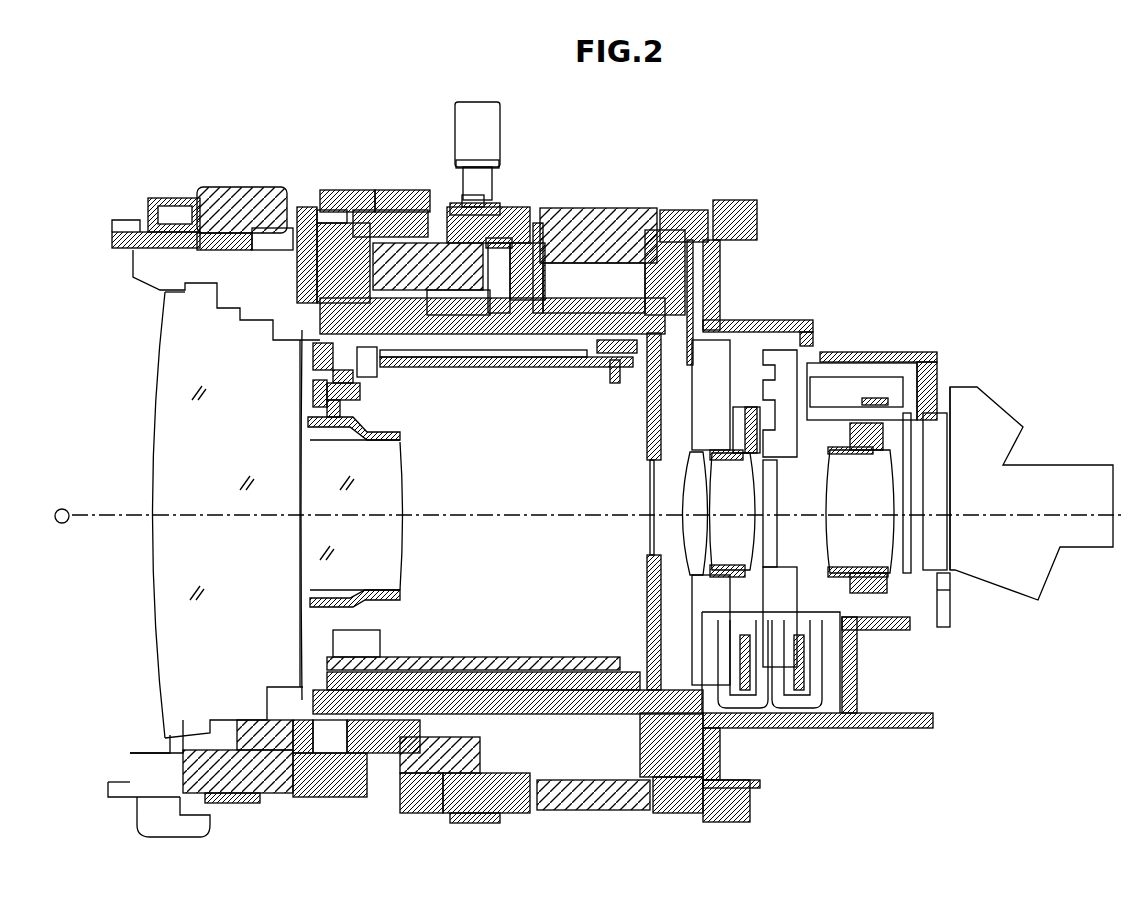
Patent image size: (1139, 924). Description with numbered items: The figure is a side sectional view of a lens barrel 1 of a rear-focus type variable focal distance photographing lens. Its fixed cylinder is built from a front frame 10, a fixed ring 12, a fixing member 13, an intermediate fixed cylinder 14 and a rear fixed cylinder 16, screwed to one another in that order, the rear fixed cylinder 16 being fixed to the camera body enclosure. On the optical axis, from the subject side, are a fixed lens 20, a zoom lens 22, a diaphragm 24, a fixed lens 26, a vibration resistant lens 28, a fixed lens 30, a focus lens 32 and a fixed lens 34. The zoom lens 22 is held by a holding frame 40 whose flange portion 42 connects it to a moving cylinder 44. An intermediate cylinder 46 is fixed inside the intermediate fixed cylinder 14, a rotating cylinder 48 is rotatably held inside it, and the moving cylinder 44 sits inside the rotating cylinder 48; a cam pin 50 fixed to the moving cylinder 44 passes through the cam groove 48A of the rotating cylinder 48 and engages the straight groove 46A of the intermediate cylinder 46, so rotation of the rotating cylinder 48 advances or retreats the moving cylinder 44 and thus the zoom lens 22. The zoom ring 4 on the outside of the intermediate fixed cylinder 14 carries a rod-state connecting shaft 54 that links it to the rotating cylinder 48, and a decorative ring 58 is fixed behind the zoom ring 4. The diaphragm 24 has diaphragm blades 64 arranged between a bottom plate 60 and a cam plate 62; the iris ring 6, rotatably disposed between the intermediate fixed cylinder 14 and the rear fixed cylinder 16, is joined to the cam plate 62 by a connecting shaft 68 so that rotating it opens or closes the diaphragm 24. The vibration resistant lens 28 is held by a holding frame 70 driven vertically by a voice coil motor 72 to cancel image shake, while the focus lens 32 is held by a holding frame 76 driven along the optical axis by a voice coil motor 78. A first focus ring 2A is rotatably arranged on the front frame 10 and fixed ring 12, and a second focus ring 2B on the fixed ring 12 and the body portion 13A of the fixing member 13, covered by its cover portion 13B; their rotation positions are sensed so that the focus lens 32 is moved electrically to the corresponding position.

The lens barrel 1 is at (158, 98).
The front frame 10 is at (178, 222).
The first focus ring 2A is at (245, 192).
The second focus ring 2B is at (398, 192).
The fixed ring 12 is at (302, 210).
The fixing member 13 is at (440, 245).
The body portion 13A is at (458, 303).
The cover portion 13B is at (340, 192).
The zoom ring 4 is at (512, 215).
The connecting shaft 54 is at (520, 272).
The intermediate fixed cylinder 14 is at (555, 212).
The decorative ring 58 is at (635, 212).
The iris ring 6 is at (688, 215).
The rear fixed cylinder 16 is at (740, 200).
The connecting shaft 68 is at (695, 268).
The voice coil motor 78 is at (872, 362).
The fixed lens 34 is at (920, 445).
The fixed lens 20 is at (216, 522).
The zoom lens 22 is at (352, 515).
The cam pin 50 is at (315, 355).
The cam groove 48A is at (335, 375).
The moving cylinder 44 is at (375, 370).
The flange portion 42 is at (345, 400).
The holding frame 40 is at (370, 425).
The intermediate cylinder 46 is at (525, 368).
The straight groove 46A is at (558, 358).
The rotating cylinder 48 is at (615, 365).
The cam plate 62 is at (648, 438).
The diaphragm blades 64 is at (650, 538).
The bottom plate 60 is at (648, 586).
The diaphragm 24 is at (660, 494).
The fixed lens 26 is at (688, 462).
The holding frame 70 is at (718, 455).
The vibration resistant lens 28 is at (735, 455).
The fixed lens 30 is at (778, 492).
The focus lens 32 is at (860, 512).
The holding frame 76 is at (870, 448).
The voice coil motor 72 is at (830, 674).